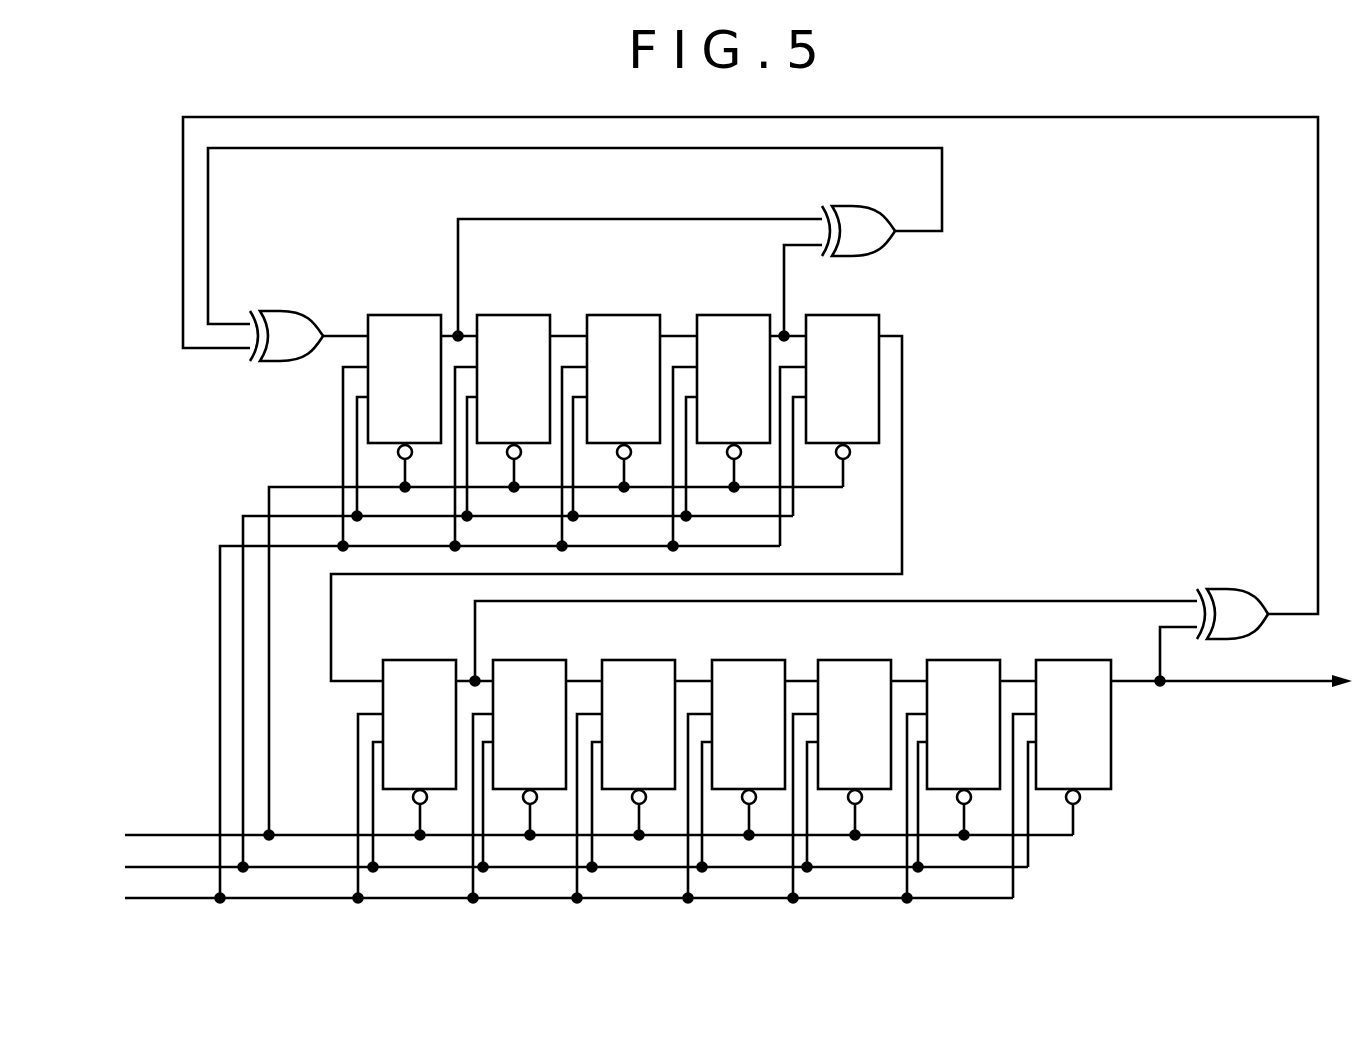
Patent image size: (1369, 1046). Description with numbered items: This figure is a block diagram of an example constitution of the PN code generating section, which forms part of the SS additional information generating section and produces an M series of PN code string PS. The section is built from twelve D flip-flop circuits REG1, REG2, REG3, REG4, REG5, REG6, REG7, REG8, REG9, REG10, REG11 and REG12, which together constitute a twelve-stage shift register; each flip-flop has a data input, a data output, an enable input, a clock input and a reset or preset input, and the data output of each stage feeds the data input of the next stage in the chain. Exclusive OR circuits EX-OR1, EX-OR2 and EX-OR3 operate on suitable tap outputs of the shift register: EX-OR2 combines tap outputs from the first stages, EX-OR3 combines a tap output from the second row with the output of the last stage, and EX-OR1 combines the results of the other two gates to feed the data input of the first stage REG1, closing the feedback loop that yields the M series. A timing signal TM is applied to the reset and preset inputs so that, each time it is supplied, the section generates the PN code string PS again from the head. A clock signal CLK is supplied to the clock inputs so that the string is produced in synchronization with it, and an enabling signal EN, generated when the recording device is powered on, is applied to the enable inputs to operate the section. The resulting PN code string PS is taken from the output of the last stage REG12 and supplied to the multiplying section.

The exclusive OR circuit EX-OR1 is at (276, 312).
The exclusive OR circuit EX-OR2 is at (848, 208).
The exclusive OR circuit EX-OR3 is at (1215, 588).
The D flip-flop circuit REG1 is at (389, 313).
The D flip-flop circuit REG2 is at (516, 313).
The D flip-flop circuit REG3 is at (622, 313).
The D flip-flop circuit REG4 is at (730, 313).
The D flip-flop circuit REG5 is at (856, 313).
The D flip-flop circuit REG6 is at (403, 652).
The D flip-flop circuit REG7 is at (530, 652).
The D flip-flop circuit REG8 is at (638, 652).
The D flip-flop circuit REG9 is at (752, 652).
The D flip-flop circuit REG10 is at (858, 652).
The D flip-flop circuit REG11 is at (970, 652).
The D flip-flop circuit REG12 is at (1078, 652).
The PN code string PS is at (1231, 669).
The timing signal TM is at (598, 663).
The clock signal CLK is at (576, 694).
The enabling signal EN is at (569, 724).